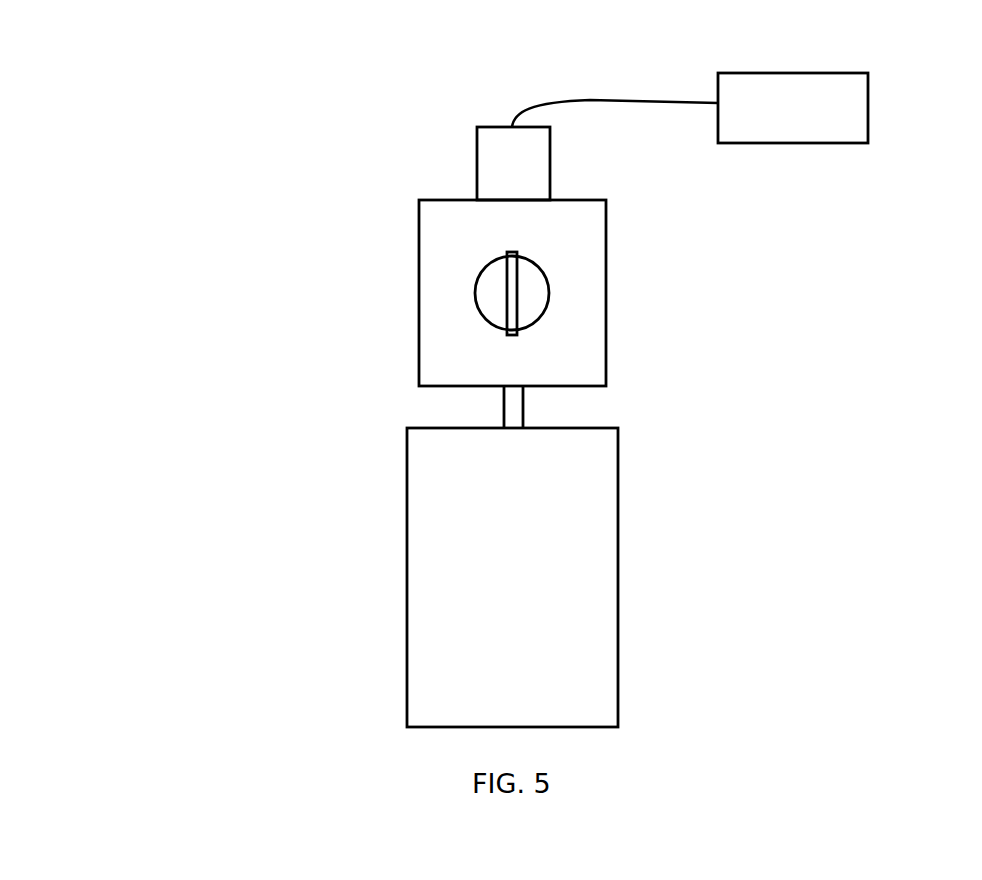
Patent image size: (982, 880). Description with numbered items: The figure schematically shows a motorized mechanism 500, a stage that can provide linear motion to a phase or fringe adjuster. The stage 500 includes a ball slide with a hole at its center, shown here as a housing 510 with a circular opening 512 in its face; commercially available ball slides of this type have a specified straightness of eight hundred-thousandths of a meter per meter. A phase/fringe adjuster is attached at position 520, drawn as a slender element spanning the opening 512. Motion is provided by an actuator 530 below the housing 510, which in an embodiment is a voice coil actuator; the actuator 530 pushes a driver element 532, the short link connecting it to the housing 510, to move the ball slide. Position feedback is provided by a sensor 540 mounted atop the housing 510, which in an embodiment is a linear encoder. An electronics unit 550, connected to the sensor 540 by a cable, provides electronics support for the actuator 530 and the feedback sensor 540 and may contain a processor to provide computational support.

The motorized mechanism 500 is at (308, 99).
The housing 510 is at (419, 213).
The lens opening 512 is at (532, 262).
The position 520 is at (518, 308).
The actuator 530 is at (618, 511).
The driver element 532 is at (523, 402).
The sensor 540 is at (552, 178).
The electronics unit 550 is at (868, 107).